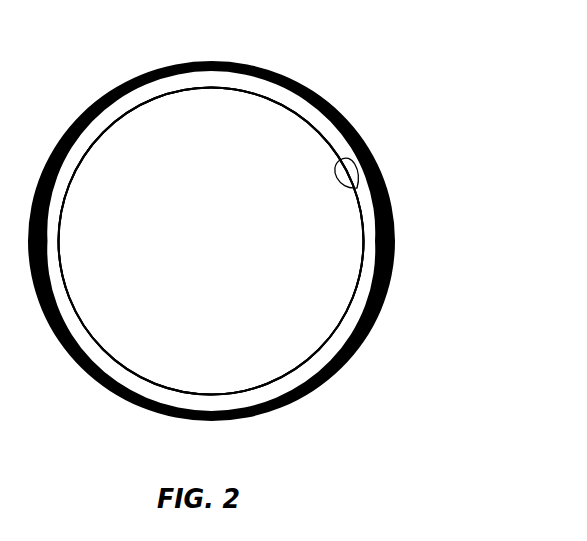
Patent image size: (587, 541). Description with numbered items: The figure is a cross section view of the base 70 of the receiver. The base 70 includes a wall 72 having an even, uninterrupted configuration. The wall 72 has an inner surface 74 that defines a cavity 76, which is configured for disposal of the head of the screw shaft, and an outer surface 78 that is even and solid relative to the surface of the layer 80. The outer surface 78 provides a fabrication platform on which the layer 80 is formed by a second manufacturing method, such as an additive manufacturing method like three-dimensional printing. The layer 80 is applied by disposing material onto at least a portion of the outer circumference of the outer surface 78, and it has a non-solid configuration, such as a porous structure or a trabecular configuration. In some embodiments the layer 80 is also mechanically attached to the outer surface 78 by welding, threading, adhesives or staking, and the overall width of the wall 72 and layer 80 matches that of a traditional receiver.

The base 70 is at (273, 235).
The wall 72 is at (317, 120).
The inner surface 74 is at (355, 186).
The cavity 76 is at (316, 319).
The outer surface 78 is at (108, 375).
The layer 80 is at (159, 436).